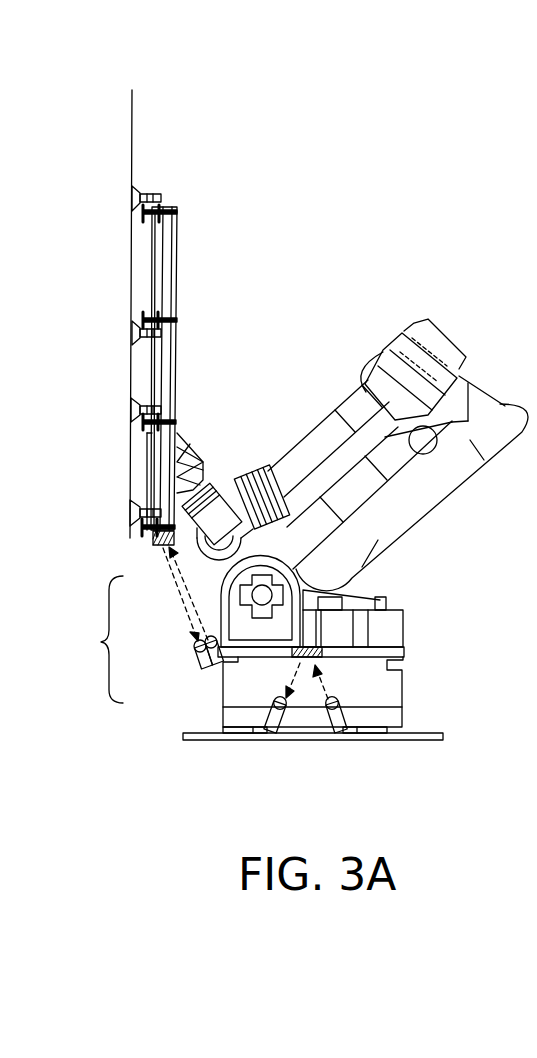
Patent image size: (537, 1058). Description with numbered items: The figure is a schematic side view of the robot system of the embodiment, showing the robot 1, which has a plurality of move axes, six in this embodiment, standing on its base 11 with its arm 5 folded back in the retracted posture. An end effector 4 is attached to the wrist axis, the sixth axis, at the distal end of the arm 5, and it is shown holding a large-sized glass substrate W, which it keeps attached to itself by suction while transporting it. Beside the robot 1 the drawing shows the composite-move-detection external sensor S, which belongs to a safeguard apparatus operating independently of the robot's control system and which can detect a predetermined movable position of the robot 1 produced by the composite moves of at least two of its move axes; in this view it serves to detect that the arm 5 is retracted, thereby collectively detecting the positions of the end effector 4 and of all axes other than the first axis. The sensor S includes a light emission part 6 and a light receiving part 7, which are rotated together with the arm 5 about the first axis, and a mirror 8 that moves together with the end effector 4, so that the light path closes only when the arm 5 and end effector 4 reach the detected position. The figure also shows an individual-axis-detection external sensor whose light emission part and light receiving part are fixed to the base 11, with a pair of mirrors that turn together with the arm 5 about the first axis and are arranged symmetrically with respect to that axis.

The glass substrate W is at (132, 133).
The robot 1 is at (386, 224).
The end effector 4 is at (177, 246).
The arm 5 is at (470, 508).
The light emission part 6 is at (206, 669).
The light receiving part 7 is at (198, 654).
The mirror 8 is at (160, 548).
The composite-move-detection external sensor S is at (98, 639).
The base 11 is at (404, 690).